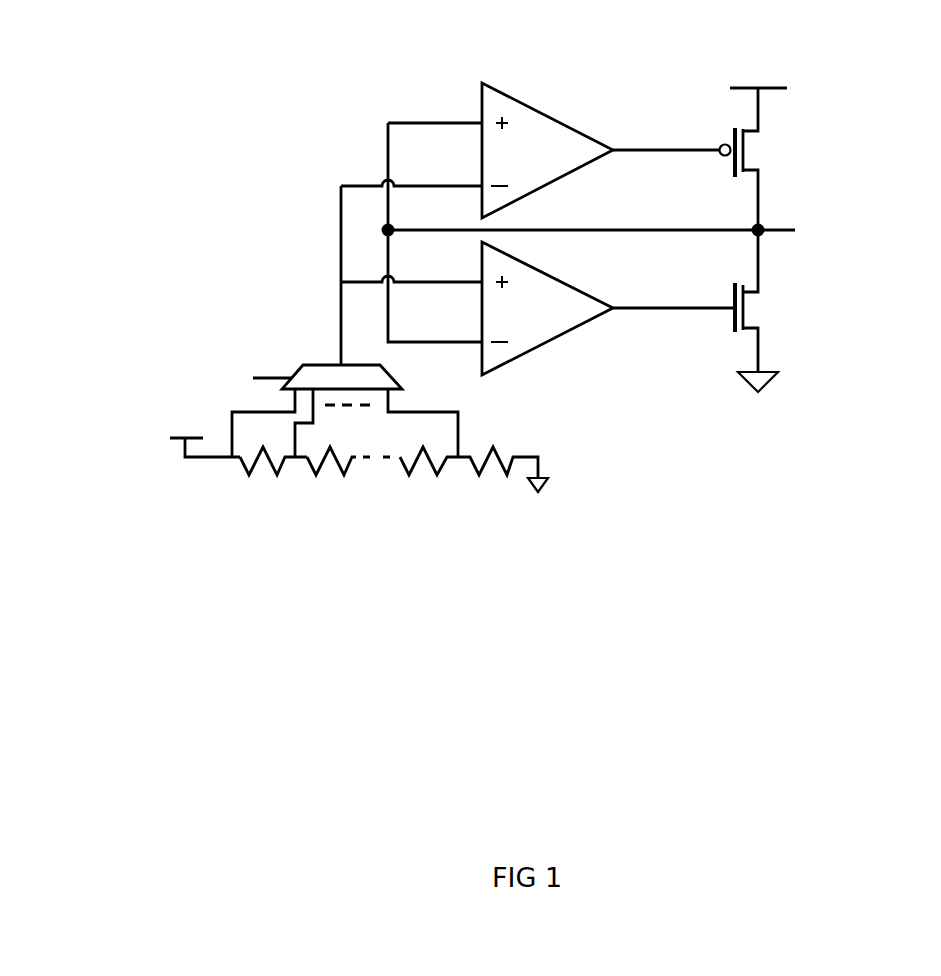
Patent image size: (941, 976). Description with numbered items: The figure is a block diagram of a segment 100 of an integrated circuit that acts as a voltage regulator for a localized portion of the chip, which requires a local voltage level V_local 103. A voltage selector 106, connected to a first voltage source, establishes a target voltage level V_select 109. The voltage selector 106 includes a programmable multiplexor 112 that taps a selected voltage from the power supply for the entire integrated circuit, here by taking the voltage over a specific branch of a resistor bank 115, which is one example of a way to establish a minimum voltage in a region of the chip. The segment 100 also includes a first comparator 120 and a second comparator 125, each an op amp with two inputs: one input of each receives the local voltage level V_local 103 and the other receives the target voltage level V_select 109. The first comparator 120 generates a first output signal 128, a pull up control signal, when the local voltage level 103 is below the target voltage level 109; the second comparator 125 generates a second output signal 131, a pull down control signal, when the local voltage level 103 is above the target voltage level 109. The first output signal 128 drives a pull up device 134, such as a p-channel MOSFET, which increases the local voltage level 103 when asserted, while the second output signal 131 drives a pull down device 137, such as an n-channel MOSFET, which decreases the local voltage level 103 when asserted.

The segment 100 is at (726, 607).
The local voltage level V_local 103 is at (831, 210).
The voltage selector 106 is at (207, 495).
The target voltage level V_select 109 is at (195, 348).
The programmable multiplexor 112 is at (327, 365).
The resistor bank 115 is at (354, 482).
The first comparator 120 is at (517, 102).
The second comparator 125 is at (530, 352).
The first output signal 128 is at (636, 150).
The second output signal 131 is at (654, 309).
The pull up device 134 is at (752, 148).
The pull down device 137 is at (757, 312).